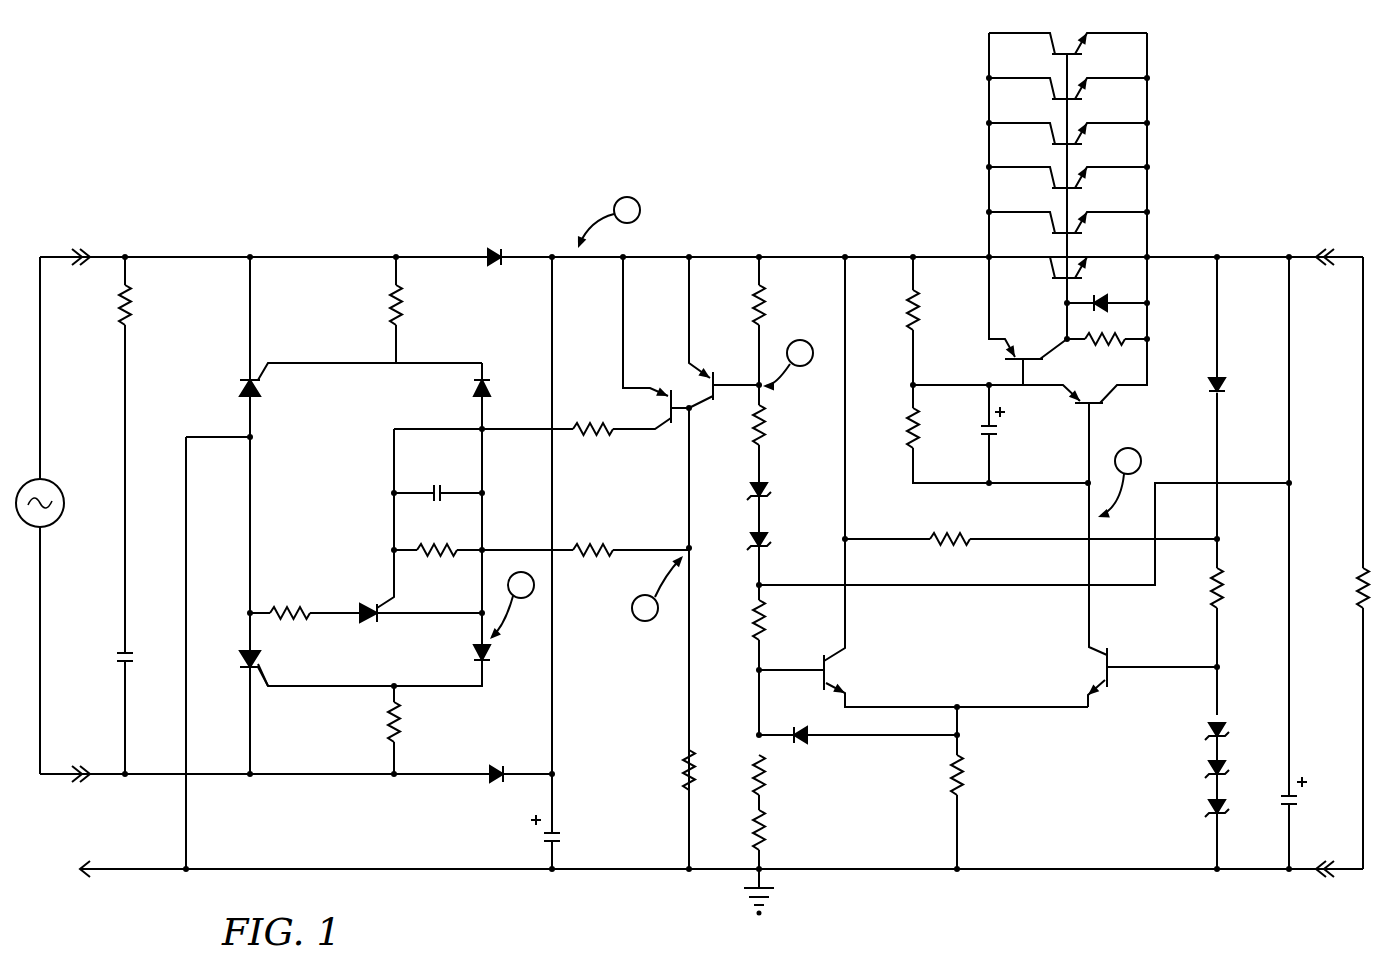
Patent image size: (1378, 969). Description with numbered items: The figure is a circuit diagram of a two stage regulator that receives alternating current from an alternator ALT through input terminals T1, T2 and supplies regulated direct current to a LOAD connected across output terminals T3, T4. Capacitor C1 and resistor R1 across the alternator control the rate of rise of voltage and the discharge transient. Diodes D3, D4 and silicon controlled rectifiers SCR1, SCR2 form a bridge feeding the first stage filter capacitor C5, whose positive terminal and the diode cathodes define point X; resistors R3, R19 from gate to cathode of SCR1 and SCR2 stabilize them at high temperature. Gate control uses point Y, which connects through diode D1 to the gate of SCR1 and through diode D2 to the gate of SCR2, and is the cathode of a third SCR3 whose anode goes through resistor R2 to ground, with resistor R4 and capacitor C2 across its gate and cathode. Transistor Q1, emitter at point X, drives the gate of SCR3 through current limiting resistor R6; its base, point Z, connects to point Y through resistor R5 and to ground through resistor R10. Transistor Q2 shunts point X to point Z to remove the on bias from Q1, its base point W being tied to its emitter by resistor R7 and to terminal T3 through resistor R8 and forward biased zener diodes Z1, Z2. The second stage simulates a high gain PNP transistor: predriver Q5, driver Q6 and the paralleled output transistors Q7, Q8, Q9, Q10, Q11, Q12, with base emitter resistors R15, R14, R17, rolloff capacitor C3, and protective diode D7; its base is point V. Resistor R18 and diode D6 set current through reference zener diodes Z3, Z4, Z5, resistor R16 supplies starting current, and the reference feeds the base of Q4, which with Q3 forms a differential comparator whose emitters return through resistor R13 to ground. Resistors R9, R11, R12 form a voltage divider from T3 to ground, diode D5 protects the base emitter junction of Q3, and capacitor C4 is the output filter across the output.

The input terminal T1 is at (80, 241).
The input terminal T2 is at (80, 790).
The output terminal T3 is at (1325, 241).
The output terminal T4 is at (1325, 886).
The alternator ALT is at (47, 516).
The resistor R1 is at (139, 455).
The resistor R2 is at (305, 602).
The resistor R3 is at (410, 310).
The resistor R4 is at (438, 540).
The resistor R5 is at (585, 540).
The current limiting resistor R6 is at (576, 436).
The resistor R7 is at (773, 335).
The resistor R8 is at (773, 434).
The resistor R9 is at (773, 667).
The resistor R10 is at (669, 809).
The resistor R11 is at (778, 782).
The resistor R12 is at (778, 839).
The current limiting resistor R13 is at (976, 788).
The resistor R14 is at (932, 321).
The resistor R15 is at (997, 434).
The resistor R16 is at (1031, 529).
The resistor R17 is at (1107, 349).
The resistor R18 is at (1236, 627).
The resistor R19 is at (413, 730).
The capacitor C1 is at (138, 710).
The capacitor C2 is at (438, 482).
The capacitor C3 is at (1003, 434).
The output filter capacitor C4 is at (1304, 563).
The first stage filter capacitor C5 is at (560, 831).
The diode D1 is at (496, 396).
The diode D2 is at (496, 655).
The diode D3 is at (495, 245).
The diode D4 is at (498, 786).
The diode D5 is at (858, 726).
The diode D6 is at (1233, 398).
The diode D7 is at (1107, 196).
The silicon controlled rectifier SCR1 is at (361, 454).
The silicon controlled rectifier SCR2 is at (275, 711).
The third SCR SCR3 is at (421, 593).
The transistor Q1 is at (674, 420).
The second control device Q2 is at (724, 376).
The amplifying device Q3 is at (923, 482).
The amplifying device Q4 is at (1138, 677).
The predriver Q5 is at (1111, 344).
The driver Q6 is at (998, 330).
The output stage transistor Q7 is at (1068, 43).
The output stage transistor Q8 is at (1068, 88).
The output stage transistor Q9 is at (1068, 133).
The output stage transistor Q10 is at (1068, 177).
The output stage transistor Q11 is at (1068, 222).
The output stage transistor Q12 is at (1088, 267).
The zener diode Z1 is at (773, 507).
The zener diode Z2 is at (773, 565).
The zener diode Z3 is at (1203, 741).
The zener diode Z4 is at (1203, 779).
The zener diode Z5 is at (1203, 833).
The load LOAD is at (1336, 563).
The output of the first stage X is at (607, 223).
The circuit connection point Y is at (510, 607).
The circuit point Z is at (659, 587).
The control terminal of Q2 W is at (788, 365).
The base point of transistor equivalent V is at (1118, 484).